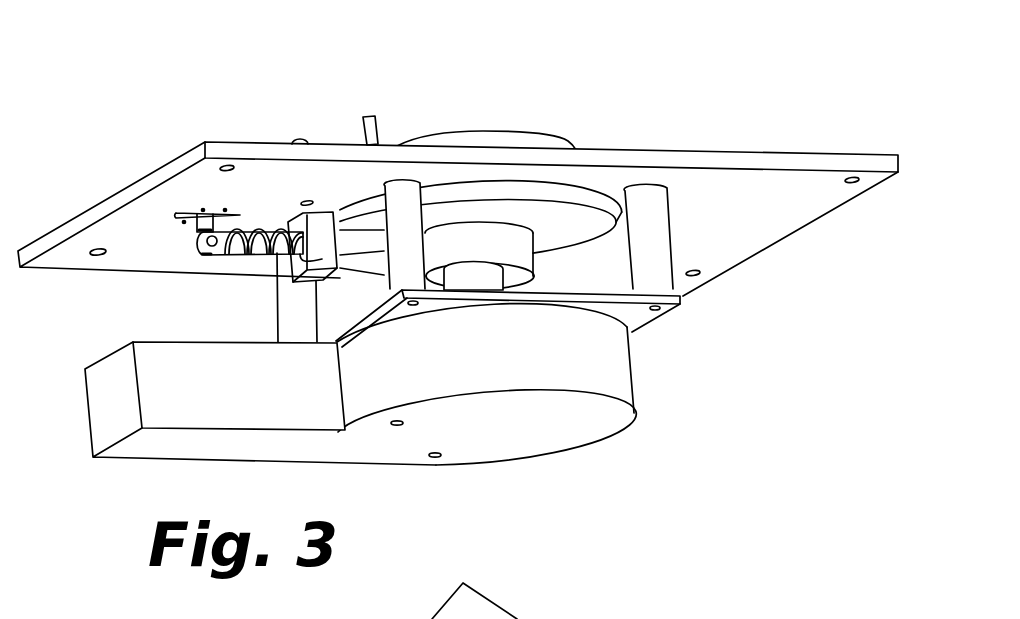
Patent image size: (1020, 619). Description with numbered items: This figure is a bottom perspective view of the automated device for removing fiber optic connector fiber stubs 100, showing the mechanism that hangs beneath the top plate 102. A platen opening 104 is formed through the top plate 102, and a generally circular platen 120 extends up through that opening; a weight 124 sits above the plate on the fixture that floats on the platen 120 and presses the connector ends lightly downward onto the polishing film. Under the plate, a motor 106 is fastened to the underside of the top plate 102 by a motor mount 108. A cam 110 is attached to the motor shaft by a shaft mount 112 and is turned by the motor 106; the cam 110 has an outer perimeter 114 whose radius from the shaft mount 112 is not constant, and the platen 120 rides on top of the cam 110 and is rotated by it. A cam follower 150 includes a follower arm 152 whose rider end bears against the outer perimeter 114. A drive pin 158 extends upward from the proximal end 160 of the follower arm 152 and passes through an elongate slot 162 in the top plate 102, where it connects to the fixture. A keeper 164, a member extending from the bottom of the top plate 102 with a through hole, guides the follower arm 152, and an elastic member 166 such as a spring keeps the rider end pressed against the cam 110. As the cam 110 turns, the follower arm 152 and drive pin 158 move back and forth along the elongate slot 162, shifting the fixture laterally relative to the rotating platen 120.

The automated device for removing fiber optic connector fiber stubs 100 is at (738, 126).
The top plate 102 is at (82, 223).
The platen opening 104 is at (557, 182).
The motor 106 is at (587, 422).
The motor mount 108 is at (640, 315).
The cam 110 is at (513, 211).
The shaft mount 112 is at (470, 275).
The outer perimeter 114 is at (555, 225).
The platen 120 is at (645, 192).
The weight 124 is at (495, 138).
The cam follower 150 is at (212, 207).
The follower arm 152 is at (278, 230).
The drive pin 158 is at (198, 226).
The proximal end 160 is at (165, 235).
The elongate slot 162 is at (175, 223).
The keeper 164 is at (320, 214).
The elastic member 166 is at (229, 257).